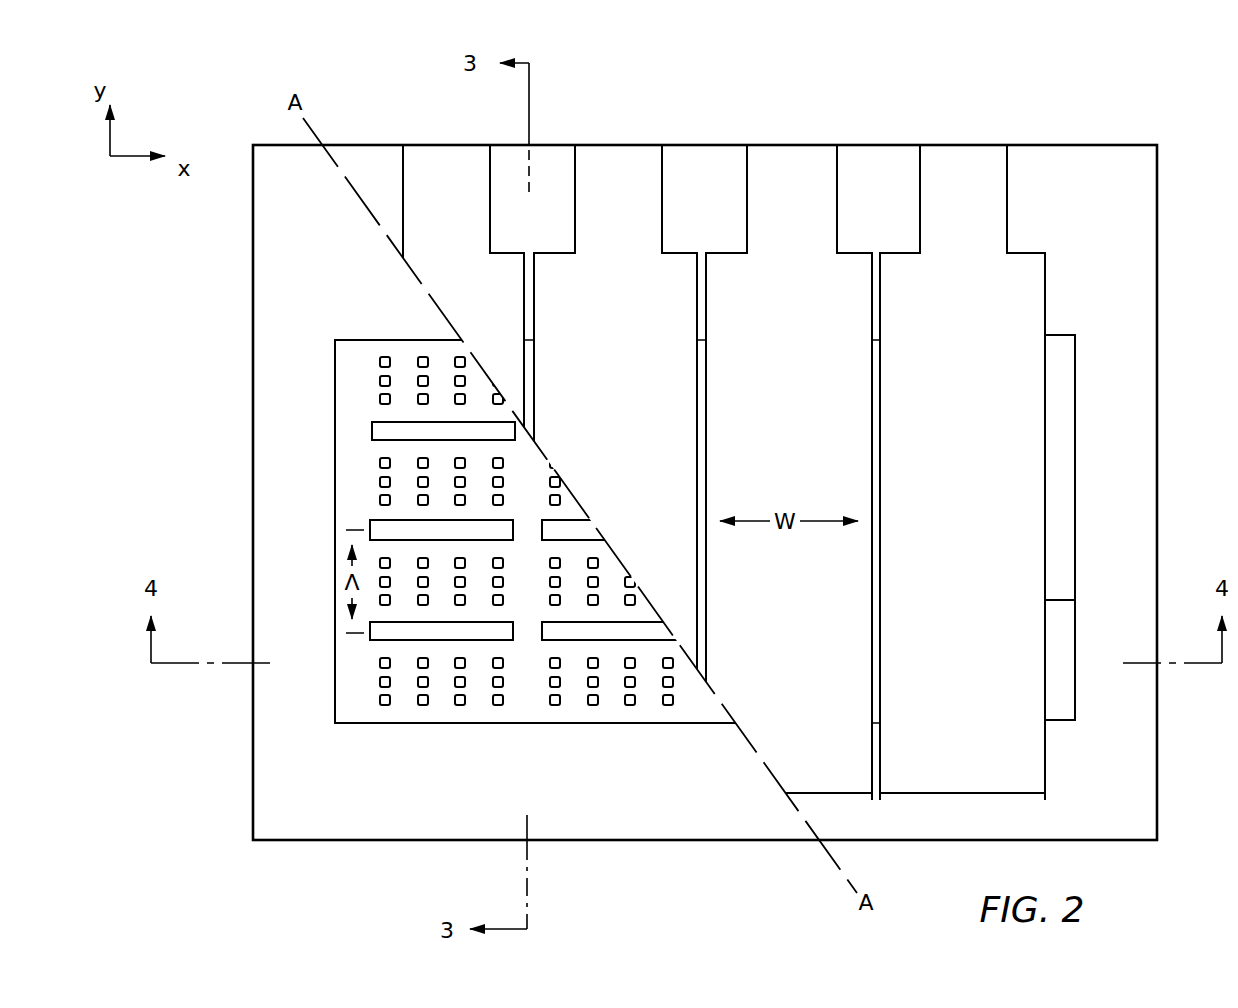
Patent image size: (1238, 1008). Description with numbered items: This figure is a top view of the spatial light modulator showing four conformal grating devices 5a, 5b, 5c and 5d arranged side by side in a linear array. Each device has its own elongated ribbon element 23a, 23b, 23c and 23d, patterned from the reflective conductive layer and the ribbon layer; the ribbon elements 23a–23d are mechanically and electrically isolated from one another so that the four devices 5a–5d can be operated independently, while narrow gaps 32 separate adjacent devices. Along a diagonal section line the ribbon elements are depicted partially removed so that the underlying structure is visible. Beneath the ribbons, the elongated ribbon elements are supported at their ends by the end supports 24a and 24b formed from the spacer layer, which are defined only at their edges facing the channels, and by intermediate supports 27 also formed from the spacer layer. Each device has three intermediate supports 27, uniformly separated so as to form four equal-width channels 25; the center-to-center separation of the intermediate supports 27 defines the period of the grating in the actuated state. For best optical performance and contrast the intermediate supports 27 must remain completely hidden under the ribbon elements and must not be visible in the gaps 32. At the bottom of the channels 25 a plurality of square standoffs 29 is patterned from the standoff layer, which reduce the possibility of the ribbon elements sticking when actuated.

The conformal grating device 5a is at (383, 138).
The conformal grating device 5b is at (548, 138).
The conformal grating device 5c is at (718, 138).
The conformal grating device 5d is at (1033, 138).
The elongated ribbon element 23a is at (425, 218).
The elongated ribbon element 23b is at (598, 218).
The elongated ribbon element 23c is at (770, 218).
The elongated ribbon element 23d is at (943, 218).
The end support 24a is at (1058, 318).
The end support 24b is at (1052, 742).
The channel 25 is at (360, 383).
The intermediate support 27 is at (372, 430).
The square standoff 29 is at (385, 707).
The gap 32 is at (707, 354).